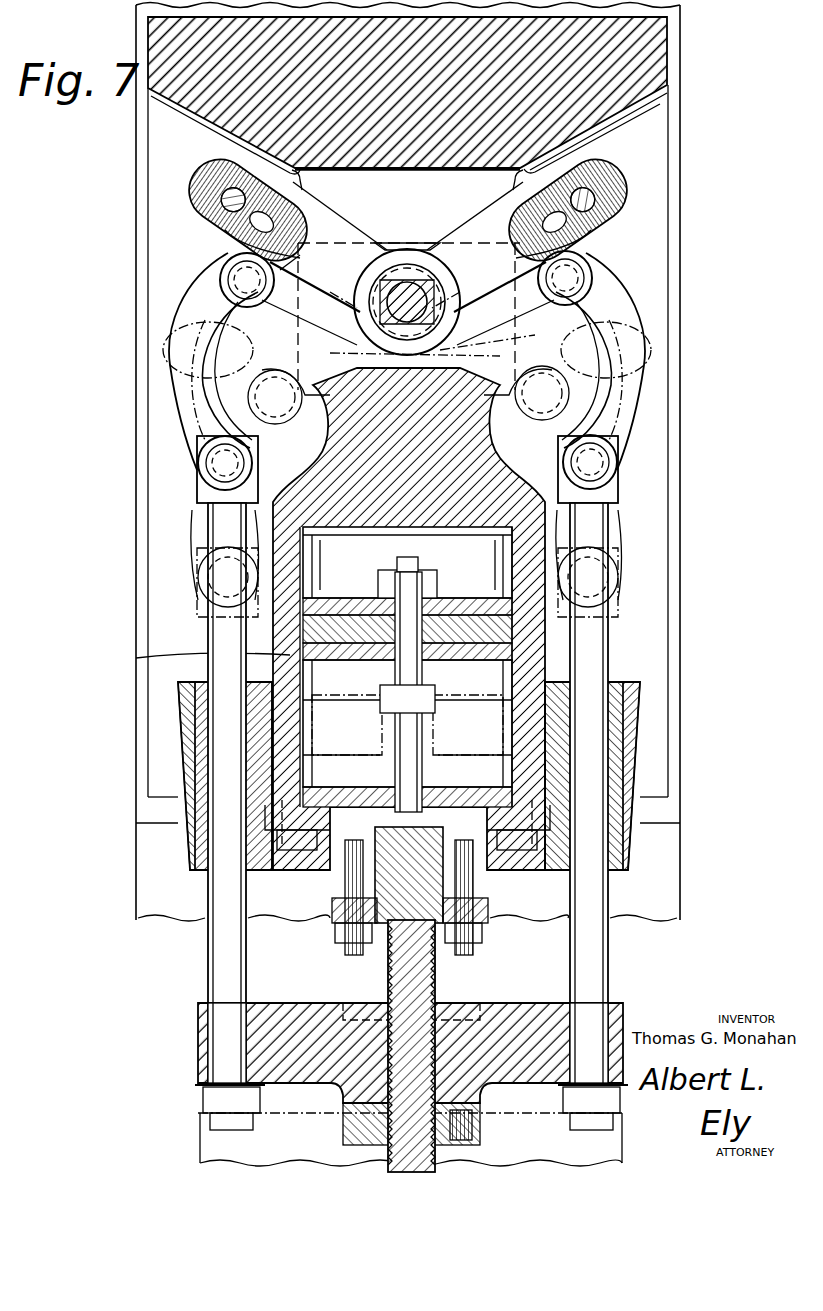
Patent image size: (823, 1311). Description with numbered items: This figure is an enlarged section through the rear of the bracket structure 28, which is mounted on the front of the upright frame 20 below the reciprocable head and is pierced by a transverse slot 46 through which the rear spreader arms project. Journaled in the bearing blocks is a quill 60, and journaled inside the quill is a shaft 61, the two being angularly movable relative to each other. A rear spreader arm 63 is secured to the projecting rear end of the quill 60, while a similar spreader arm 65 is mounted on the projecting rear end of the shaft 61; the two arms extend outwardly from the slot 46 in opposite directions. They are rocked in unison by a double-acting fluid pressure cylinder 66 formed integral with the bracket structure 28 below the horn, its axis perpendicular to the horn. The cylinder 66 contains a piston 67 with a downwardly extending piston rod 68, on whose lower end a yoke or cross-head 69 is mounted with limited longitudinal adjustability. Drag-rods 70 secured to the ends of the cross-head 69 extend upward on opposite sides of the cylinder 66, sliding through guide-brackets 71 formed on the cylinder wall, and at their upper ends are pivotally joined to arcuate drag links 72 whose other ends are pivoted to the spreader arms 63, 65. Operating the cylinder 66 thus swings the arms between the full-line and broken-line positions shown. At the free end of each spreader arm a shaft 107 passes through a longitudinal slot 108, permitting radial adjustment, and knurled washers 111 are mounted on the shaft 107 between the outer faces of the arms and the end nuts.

The frame 20 is at (680, 870).
The bracket structure 28 is at (680, 117).
The transverse slot 46 is at (586, 145).
The quill 60 is at (393, 262).
The shaft 61 is at (410, 282).
The spreader arm 63 is at (327, 218).
The spreader arm 65 is at (470, 232).
The double-acting fluid pressure cylinder 66 is at (275, 655).
The piston 67 is at (512, 627).
The piston rod 68 is at (438, 986).
The cross-head 69 is at (285, 1003).
The drag-rods 70 is at (208, 955).
The guide-brackets 71 is at (180, 738).
The arcuate drag links 72 is at (172, 405).
The shaft 107 is at (195, 196).
The slots 108 is at (243, 230).
The knurled washers 111 is at (299, 186).